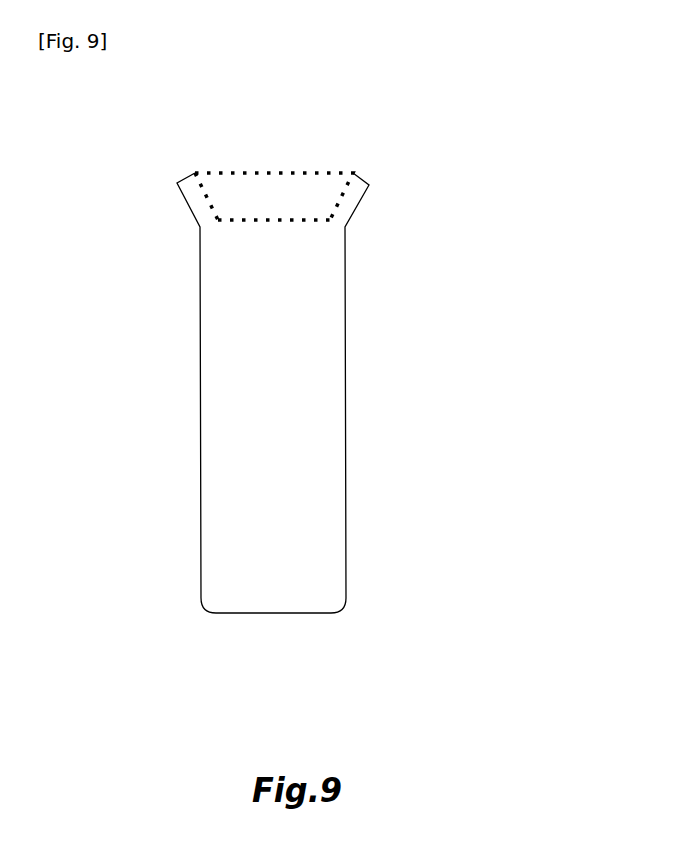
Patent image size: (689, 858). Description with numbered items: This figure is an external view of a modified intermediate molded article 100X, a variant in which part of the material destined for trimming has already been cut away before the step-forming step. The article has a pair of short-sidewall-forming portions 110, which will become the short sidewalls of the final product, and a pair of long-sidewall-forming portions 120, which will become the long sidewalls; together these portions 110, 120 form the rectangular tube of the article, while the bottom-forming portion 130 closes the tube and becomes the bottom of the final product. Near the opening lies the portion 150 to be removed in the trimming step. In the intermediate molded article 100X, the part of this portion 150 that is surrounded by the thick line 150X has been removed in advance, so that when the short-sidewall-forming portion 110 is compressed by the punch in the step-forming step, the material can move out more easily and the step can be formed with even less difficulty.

The intermediate molded article 100X is at (358, 145).
The short-sidewall-forming portion 110 is at (283, 475).
The long-sidewall-forming portion 120 is at (201, 325).
The bottom-forming portion 130 is at (275, 615).
The portion to be removed 150 is at (343, 207).
The thick line 150X is at (253, 218).